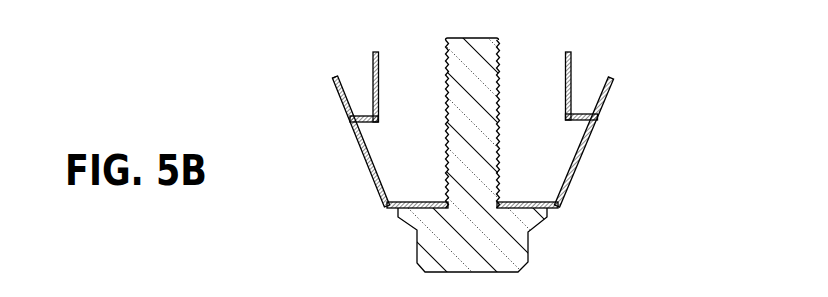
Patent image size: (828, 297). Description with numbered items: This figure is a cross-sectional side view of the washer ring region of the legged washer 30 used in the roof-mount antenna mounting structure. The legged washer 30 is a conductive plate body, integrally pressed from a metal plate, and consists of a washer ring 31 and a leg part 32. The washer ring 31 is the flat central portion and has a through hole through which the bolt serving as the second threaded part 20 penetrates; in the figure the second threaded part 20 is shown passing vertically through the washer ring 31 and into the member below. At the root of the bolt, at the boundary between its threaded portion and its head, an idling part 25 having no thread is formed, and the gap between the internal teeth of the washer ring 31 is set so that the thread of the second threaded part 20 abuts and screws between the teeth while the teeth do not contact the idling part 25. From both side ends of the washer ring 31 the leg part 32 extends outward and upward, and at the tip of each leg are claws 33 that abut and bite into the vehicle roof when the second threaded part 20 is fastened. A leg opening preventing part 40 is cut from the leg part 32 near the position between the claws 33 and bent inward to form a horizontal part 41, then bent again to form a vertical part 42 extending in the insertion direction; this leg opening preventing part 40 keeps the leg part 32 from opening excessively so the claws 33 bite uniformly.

The second threaded part 20 is at (530, 241).
The idling part 25 is at (443, 199).
The legged washer 30 is at (608, 140).
The washer ring 31 is at (522, 201).
The leg part 32 is at (365, 163).
The claws 33 is at (333, 77).
The leg opening preventing part 40 is at (584, 62).
The horizontal part 41 is at (358, 114).
The vertical part 42 is at (379, 79).